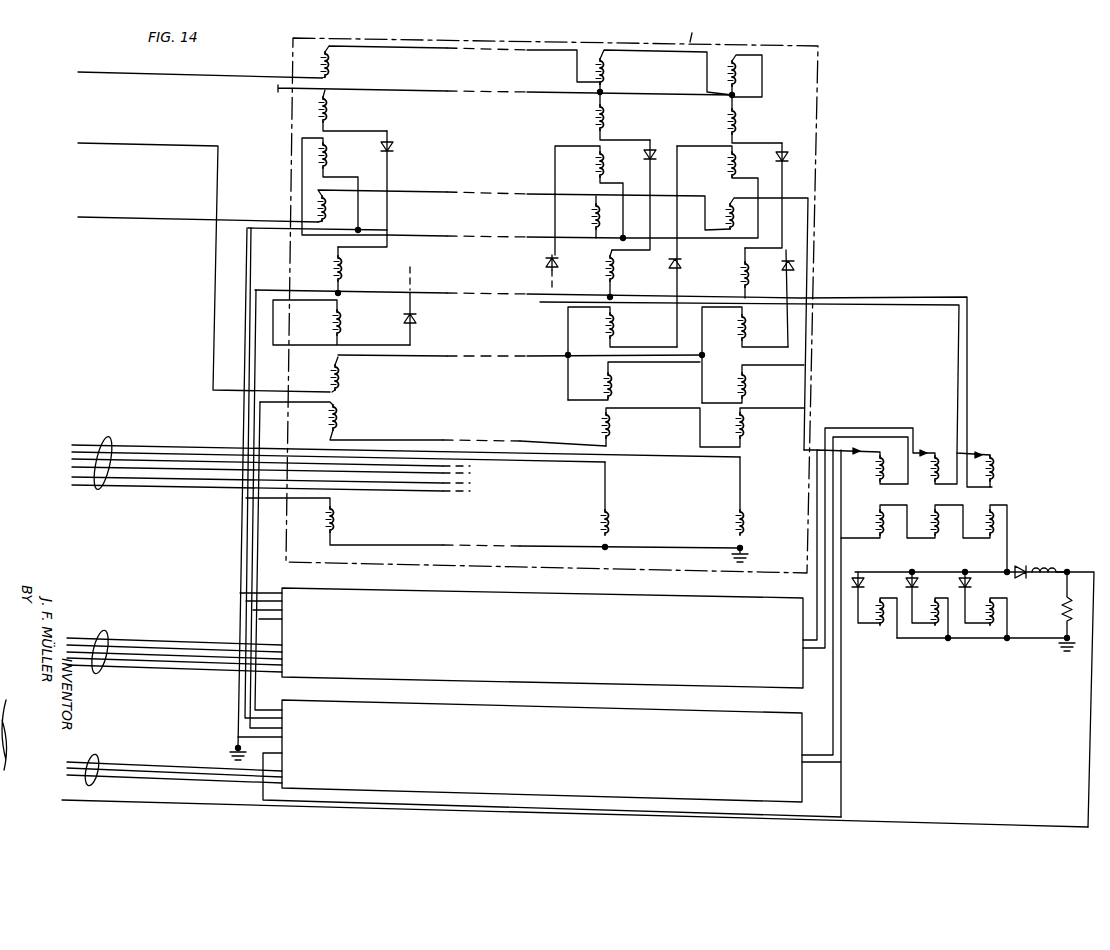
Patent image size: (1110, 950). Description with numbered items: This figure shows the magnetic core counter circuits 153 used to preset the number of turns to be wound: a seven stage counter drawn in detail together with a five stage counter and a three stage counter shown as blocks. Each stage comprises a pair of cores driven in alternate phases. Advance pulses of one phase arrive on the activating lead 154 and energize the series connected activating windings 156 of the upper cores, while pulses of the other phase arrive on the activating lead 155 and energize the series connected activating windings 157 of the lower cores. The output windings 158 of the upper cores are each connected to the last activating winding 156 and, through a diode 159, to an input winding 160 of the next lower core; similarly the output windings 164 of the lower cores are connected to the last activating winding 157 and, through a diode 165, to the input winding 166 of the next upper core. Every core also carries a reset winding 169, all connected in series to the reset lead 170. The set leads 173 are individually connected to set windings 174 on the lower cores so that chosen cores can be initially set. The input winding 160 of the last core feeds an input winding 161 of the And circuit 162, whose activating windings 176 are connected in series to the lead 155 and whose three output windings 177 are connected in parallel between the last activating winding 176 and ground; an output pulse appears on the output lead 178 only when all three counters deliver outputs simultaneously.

The magnetic core counter circuits 153 is at (819, 128).
The activating lead 154 is at (118, 74).
The activating lead 155 is at (118, 146).
The activating winding 156 is at (335, 66).
The activating winding 157 is at (345, 377).
The output winding 158 is at (335, 108).
The diode 159 is at (395, 146).
The input winding 160 is at (346, 270).
The input winding 161 is at (998, 470).
The And circuit 162 is at (950, 448).
The output winding 164 is at (346, 321).
The diode 165 is at (418, 318).
The input winding 166 is at (335, 160).
The reset winding 169 is at (335, 212).
The reset lead 170 is at (118, 219).
The set leads 173 is at (109, 442).
The set winding 174 is at (340, 522).
The activating winding 176 is at (930, 514).
The output winding 177 is at (884, 627).
The output lead 178 is at (108, 802).